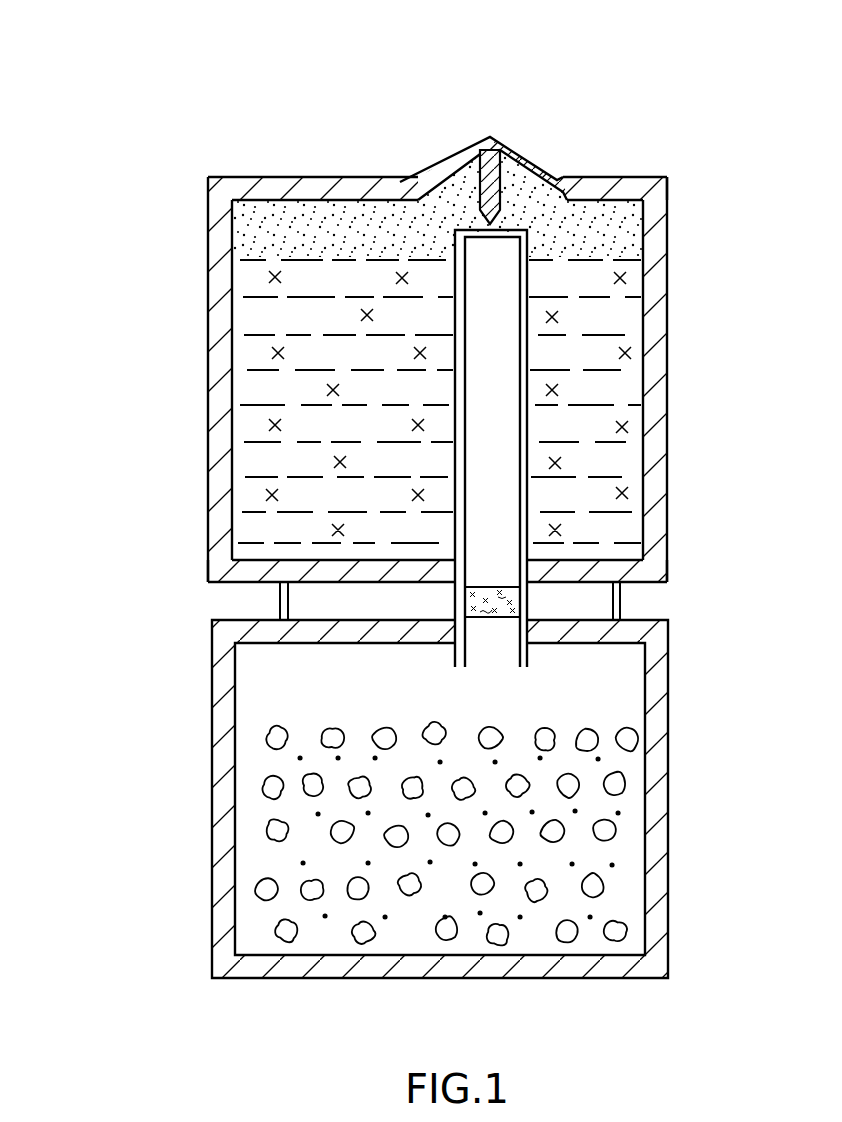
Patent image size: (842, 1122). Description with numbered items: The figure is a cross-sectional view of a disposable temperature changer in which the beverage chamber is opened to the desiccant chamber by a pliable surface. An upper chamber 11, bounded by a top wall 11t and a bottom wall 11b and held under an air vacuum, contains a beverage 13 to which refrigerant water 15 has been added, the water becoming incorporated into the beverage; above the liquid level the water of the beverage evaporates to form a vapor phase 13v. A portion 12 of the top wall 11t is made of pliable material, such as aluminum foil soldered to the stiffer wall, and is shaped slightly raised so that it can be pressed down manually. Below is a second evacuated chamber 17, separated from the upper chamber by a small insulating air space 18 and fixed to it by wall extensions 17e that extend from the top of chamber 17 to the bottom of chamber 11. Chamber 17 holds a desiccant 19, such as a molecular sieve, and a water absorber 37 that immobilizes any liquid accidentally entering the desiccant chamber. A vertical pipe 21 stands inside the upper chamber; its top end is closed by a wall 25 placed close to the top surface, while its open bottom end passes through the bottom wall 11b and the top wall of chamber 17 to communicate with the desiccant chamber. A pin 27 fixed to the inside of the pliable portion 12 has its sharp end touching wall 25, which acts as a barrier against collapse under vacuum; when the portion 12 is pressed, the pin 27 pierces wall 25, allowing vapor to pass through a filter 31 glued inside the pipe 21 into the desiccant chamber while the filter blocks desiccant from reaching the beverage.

The chamber 11 is at (668, 402).
The top wall 11t is at (600, 180).
The bottom wall 11b is at (650, 588).
The pliable portion of top wall 12 is at (468, 147).
The beverage 13 is at (307, 311).
The vapor phase 13v is at (343, 237).
The water 15 is at (393, 360).
The chamber 17 is at (668, 810).
The wall extensions 17e is at (280, 600).
The air space 18 is at (585, 615).
The desiccant 19 is at (498, 733).
The pipe 21 is at (503, 485).
The wall 25 is at (505, 242).
The pin 27 is at (510, 182).
The filter 31 is at (493, 620).
The water absorber 37 is at (300, 757).